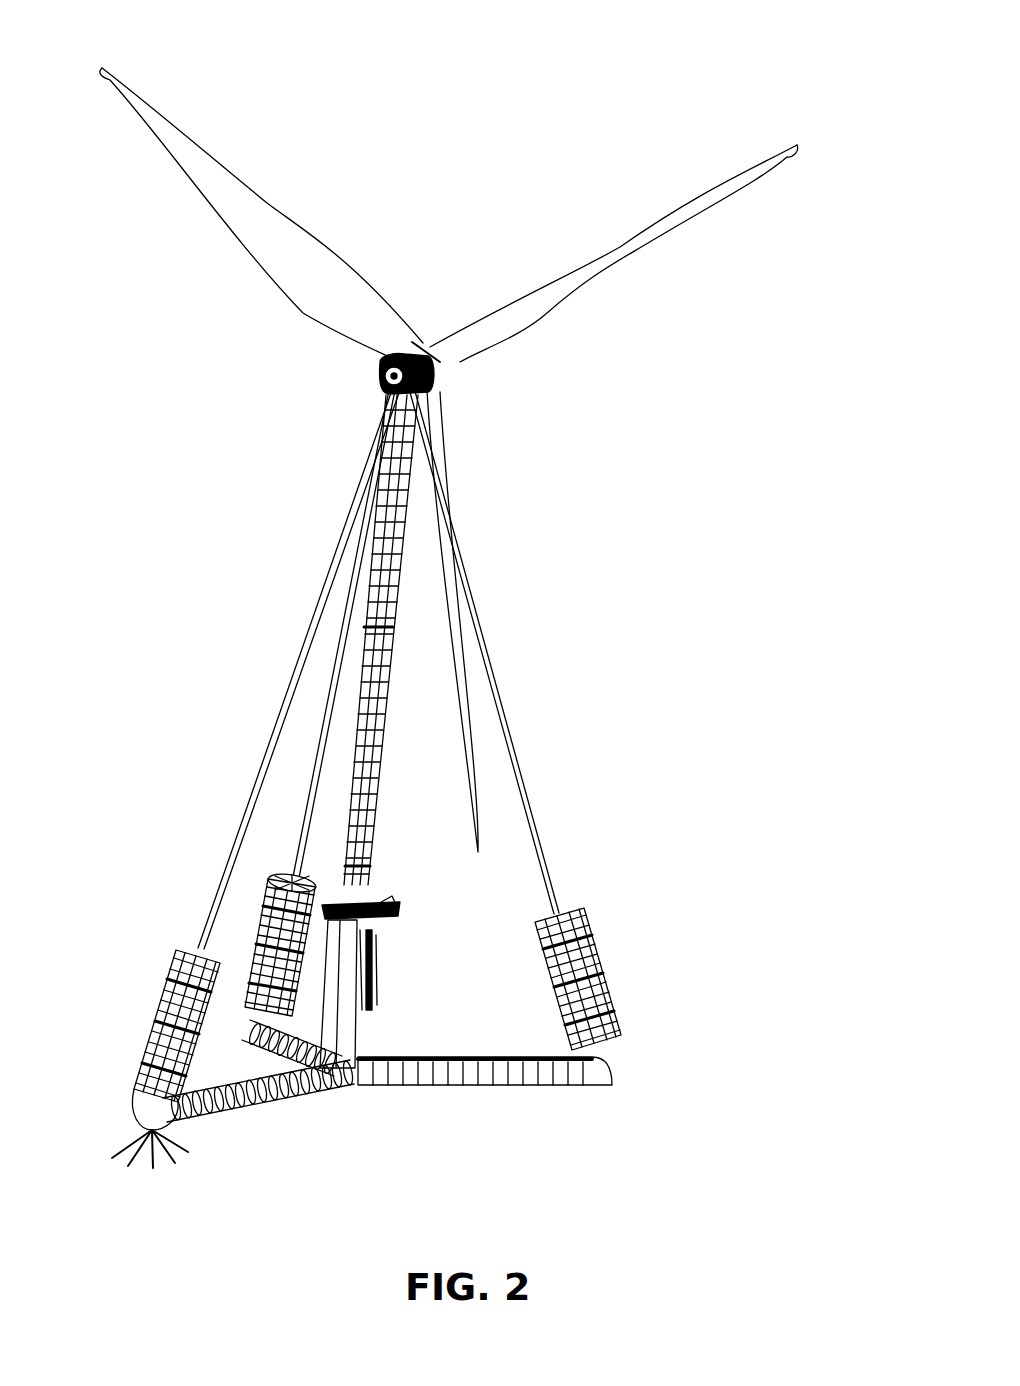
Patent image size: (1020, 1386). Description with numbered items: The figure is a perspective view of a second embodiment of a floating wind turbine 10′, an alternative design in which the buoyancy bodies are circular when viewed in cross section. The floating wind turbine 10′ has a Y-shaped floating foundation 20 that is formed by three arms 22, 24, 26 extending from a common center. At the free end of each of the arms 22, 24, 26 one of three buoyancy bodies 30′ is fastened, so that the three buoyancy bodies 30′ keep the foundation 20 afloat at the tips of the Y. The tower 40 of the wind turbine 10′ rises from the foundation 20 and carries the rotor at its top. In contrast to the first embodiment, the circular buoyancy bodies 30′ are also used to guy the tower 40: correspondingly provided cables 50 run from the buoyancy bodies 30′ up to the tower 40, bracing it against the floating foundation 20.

The floating wind turbine 10′ is at (612, 90).
The floating foundation 20 is at (502, 1092).
The arm 22 is at (237, 1103).
The arm 24 is at (413, 1080).
The arm 26 is at (310, 1087).
The buoyancy body 30′ is at (267, 895).
The tower 40 is at (372, 705).
The cable 50 is at (498, 672).